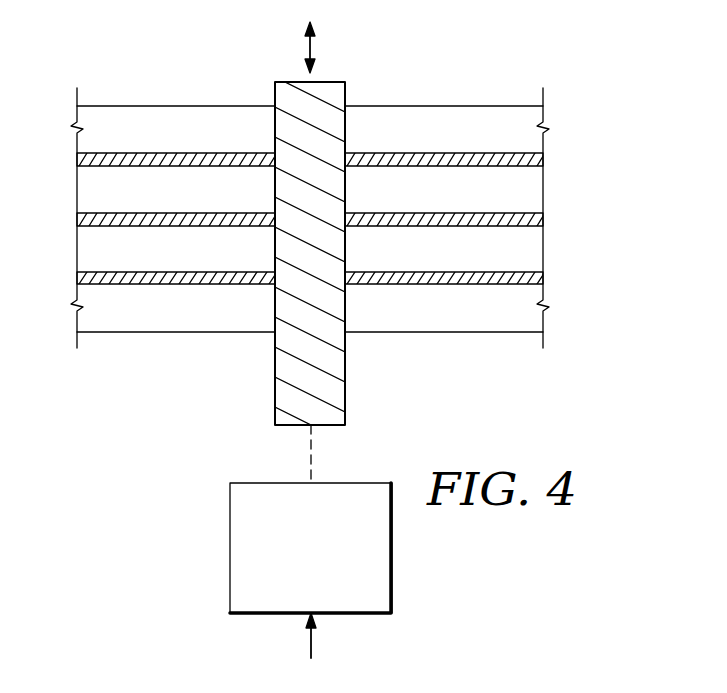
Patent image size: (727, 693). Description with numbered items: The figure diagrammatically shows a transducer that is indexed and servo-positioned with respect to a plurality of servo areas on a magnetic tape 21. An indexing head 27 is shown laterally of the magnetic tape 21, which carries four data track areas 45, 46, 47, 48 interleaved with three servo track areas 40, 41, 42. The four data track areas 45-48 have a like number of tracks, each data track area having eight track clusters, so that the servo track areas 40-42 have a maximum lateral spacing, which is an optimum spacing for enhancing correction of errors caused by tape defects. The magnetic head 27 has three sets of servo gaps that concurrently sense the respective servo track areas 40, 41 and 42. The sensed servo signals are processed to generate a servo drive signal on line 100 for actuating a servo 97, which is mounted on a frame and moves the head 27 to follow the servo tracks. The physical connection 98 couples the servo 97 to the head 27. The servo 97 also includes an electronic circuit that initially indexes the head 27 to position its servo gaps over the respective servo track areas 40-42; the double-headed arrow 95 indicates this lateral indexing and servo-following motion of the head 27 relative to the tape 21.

The magnetic tape 21 is at (160, 105).
The indexing head 27 is at (347, 360).
The servo track area 40 is at (162, 271).
The servo track area 41 is at (162, 212).
The servo track area 42 is at (162, 153).
The data track area 45 is at (449, 118).
The data track area 46 is at (537, 191).
The data track area 47 is at (537, 248).
The data track area 48 is at (460, 322).
The vertical indexing motion arrow 95 is at (305, 46).
The servo 97 is at (230, 544).
The physical connection 98 is at (310, 455).
The line 100 is at (311, 645).